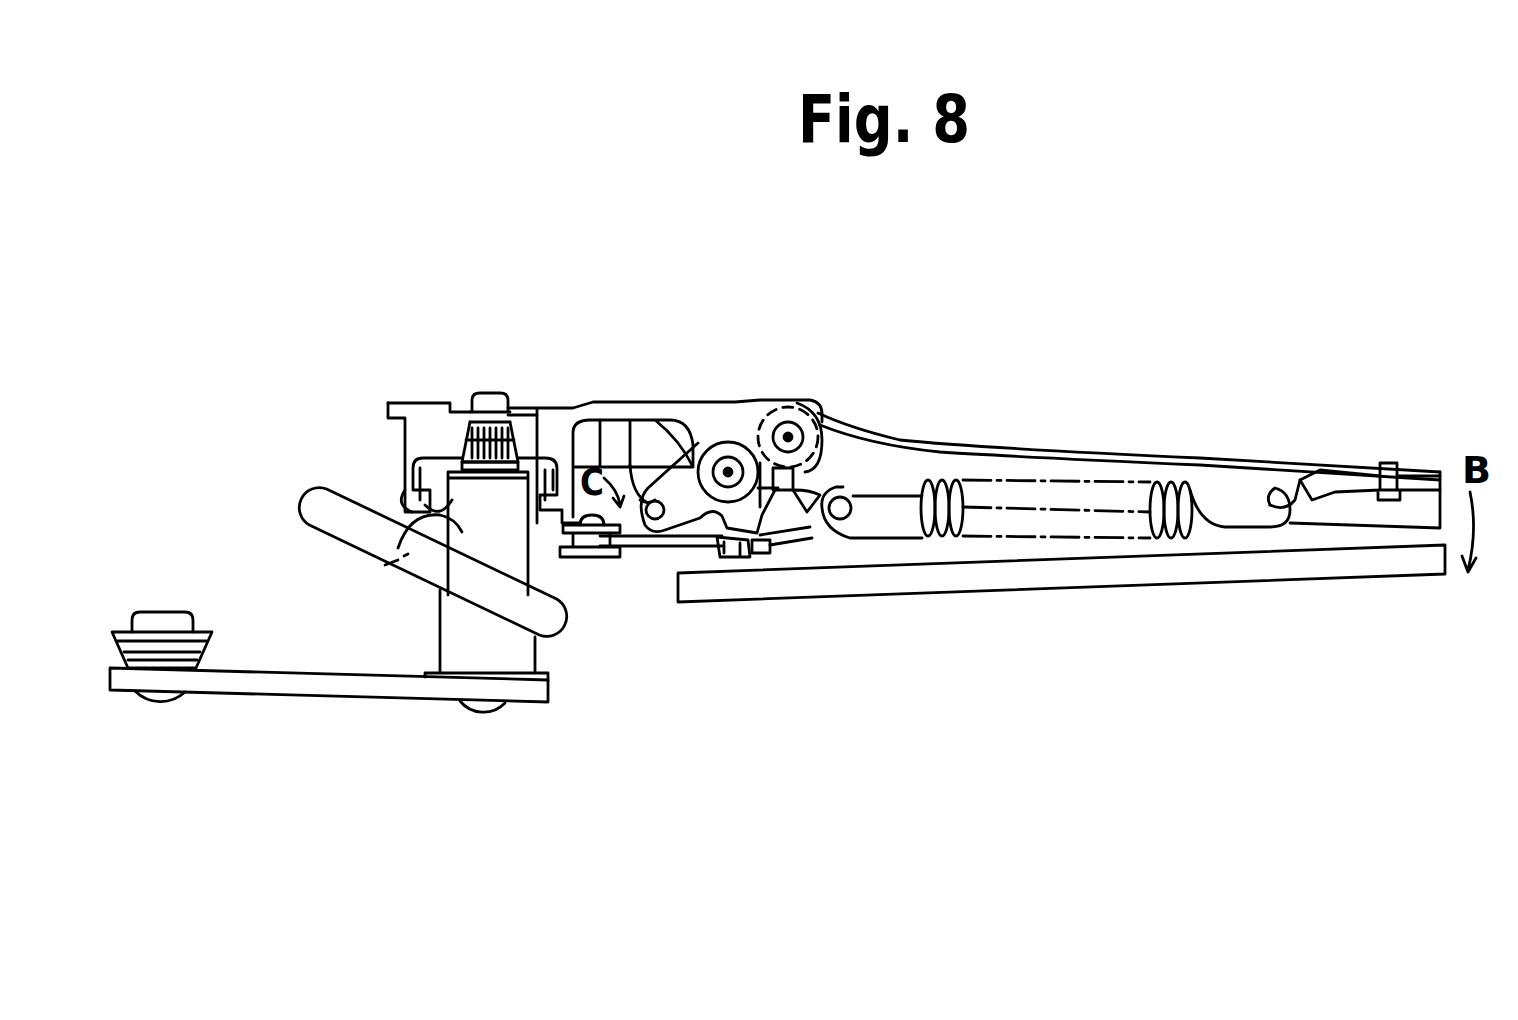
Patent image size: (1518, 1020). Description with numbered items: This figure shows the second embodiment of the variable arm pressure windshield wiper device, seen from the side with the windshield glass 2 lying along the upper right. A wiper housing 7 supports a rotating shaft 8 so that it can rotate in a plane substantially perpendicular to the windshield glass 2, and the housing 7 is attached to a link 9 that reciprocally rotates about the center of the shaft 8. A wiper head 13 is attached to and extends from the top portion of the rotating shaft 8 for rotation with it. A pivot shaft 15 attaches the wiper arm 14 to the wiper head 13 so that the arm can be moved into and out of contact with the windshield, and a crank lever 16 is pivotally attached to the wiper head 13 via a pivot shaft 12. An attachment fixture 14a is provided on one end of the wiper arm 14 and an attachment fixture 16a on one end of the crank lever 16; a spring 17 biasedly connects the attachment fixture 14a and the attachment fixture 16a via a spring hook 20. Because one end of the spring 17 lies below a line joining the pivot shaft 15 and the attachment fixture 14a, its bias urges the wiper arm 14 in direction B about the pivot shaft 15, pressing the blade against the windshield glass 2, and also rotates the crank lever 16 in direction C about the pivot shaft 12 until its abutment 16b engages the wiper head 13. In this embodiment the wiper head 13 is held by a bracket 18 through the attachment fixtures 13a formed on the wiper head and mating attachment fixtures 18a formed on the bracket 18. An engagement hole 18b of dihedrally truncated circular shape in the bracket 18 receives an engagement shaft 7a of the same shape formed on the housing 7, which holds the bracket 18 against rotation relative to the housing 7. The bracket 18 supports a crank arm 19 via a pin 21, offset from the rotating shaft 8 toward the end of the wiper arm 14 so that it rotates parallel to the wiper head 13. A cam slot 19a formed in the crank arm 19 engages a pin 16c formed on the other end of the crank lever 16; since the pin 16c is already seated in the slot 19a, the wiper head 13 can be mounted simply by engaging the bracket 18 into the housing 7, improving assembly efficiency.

The windshield glass 2 is at (1030, 585).
The wiper housing 7 is at (335, 497).
The engagement shaft 7a is at (527, 500).
The rotating shaft 8 is at (490, 410).
The link 9 is at (370, 700).
The pivot shaft 12 is at (728, 470).
The wiper head 13 is at (660, 405).
The attachment fixture 13a is at (410, 478).
The wiper arm 14 is at (1062, 447).
The attachment fixture 14a is at (1340, 478).
The pivot shaft 15 is at (790, 437).
The crank lever 16 is at (693, 458).
The attachment fixture 16a is at (640, 500).
The abutment 16b is at (800, 456).
The pin 16c is at (742, 560).
The spring 17 is at (1228, 527).
The bracket 18 is at (537, 635).
The attachment fixture 18a is at (548, 468).
The engagement hole 18b is at (400, 595).
The crank arm 19 is at (773, 560).
The cam slot 19a is at (762, 560).
The spring hook 20 is at (812, 540).
The pin 21 is at (590, 543).